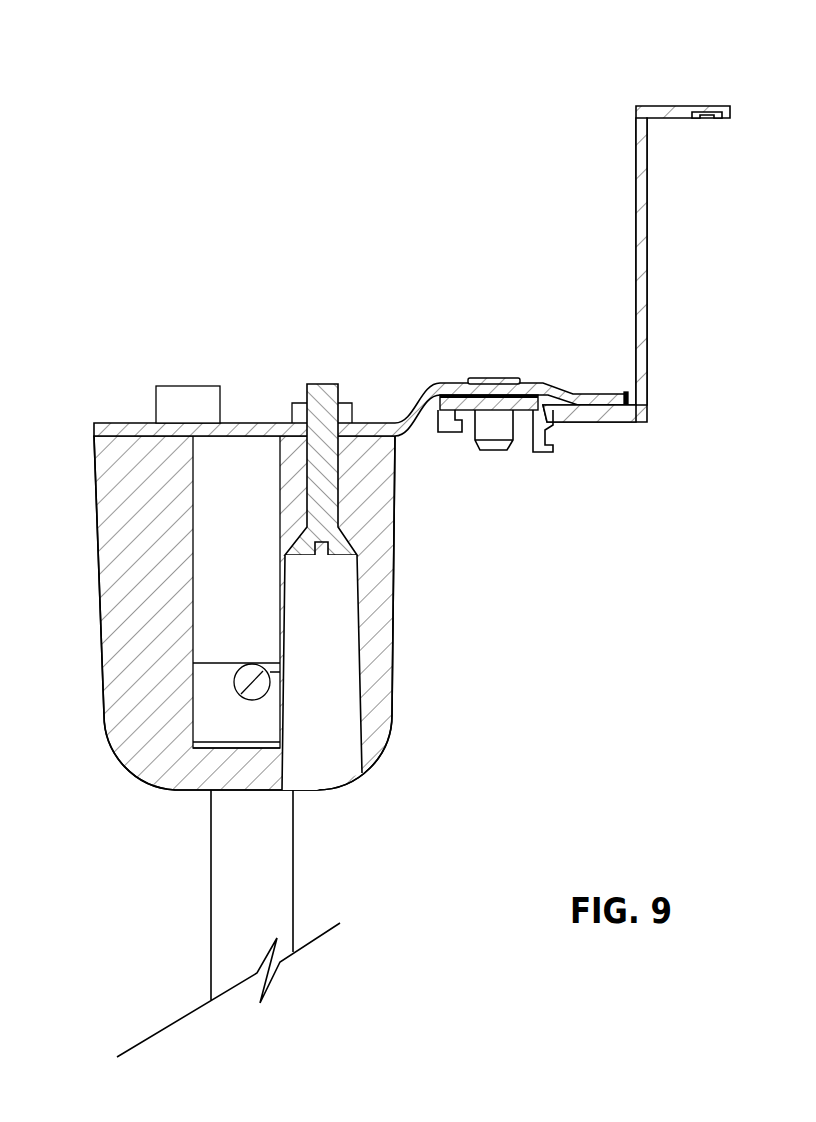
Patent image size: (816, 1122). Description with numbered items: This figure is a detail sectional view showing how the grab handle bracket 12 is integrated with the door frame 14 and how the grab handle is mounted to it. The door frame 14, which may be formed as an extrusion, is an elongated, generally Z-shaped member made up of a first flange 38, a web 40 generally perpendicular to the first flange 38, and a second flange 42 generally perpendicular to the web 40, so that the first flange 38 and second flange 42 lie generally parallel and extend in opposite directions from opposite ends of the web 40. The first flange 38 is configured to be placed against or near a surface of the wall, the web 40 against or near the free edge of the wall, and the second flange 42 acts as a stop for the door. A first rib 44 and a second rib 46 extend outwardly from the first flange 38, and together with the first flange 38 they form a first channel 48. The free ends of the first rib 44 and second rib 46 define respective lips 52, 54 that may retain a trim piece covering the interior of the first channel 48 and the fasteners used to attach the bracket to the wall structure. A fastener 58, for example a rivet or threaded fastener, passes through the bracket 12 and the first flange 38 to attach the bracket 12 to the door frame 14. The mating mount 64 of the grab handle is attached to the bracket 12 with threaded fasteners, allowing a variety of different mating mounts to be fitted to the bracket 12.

The grab handle bracket 12 is at (117, 428).
The door frame 14 is at (643, 224).
The first flange 38 is at (607, 416).
The web 40 is at (643, 303).
The second flange 42 is at (673, 110).
The first rib 44 is at (546, 452).
The second rib 46 is at (443, 432).
The first channel 48 is at (517, 428).
The lip 52 is at (536, 395).
The lip 54 is at (457, 383).
The fastener 58 is at (495, 378).
The mating mount 64 is at (123, 610).